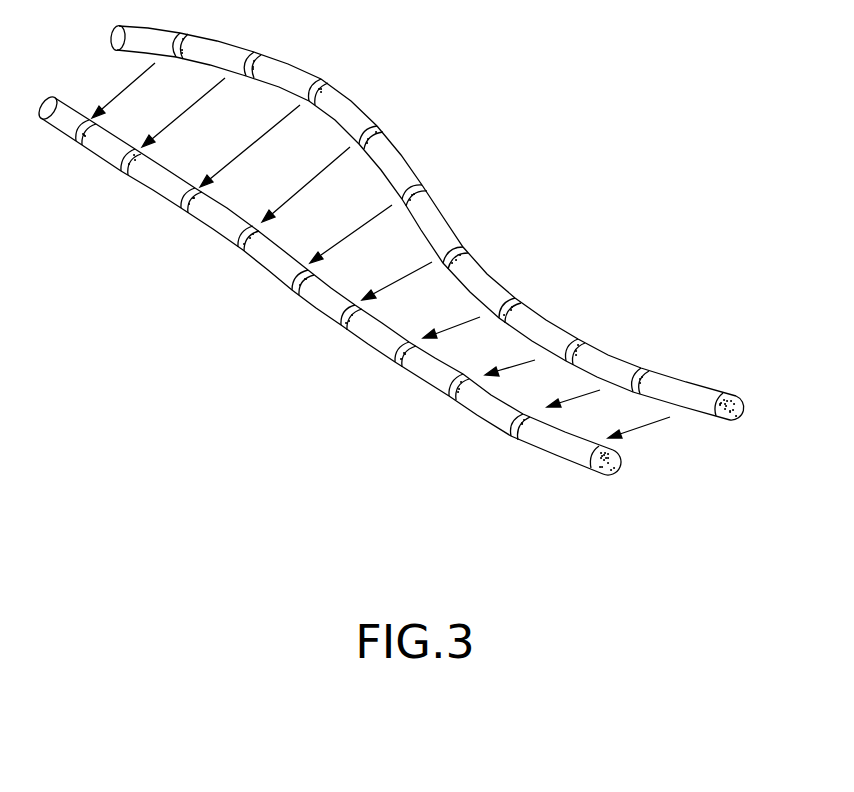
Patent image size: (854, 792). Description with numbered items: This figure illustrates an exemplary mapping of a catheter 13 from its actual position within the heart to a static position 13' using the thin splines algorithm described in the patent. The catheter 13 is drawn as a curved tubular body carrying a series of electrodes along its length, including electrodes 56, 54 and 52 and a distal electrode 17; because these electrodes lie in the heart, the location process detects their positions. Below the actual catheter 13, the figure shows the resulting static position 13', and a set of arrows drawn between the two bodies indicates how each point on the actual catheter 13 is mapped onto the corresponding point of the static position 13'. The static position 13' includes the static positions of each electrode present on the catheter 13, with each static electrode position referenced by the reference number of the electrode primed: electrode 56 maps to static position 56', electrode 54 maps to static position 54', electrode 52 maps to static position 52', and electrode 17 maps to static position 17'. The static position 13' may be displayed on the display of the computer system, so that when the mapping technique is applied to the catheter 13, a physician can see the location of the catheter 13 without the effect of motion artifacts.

The catheter 13 is at (423, 213).
The static position 13' is at (324, 284).
The electrode 56 is at (529, 291).
The electrode 54 is at (589, 330).
The electrode 52 is at (653, 359).
The electrode 17 is at (741, 386).
The static position of electrode 56' is at (392, 381).
The static position of electrode 54' is at (446, 414).
The static position of electrode 52' is at (510, 449).
The static position of electrode 17' is at (605, 492).